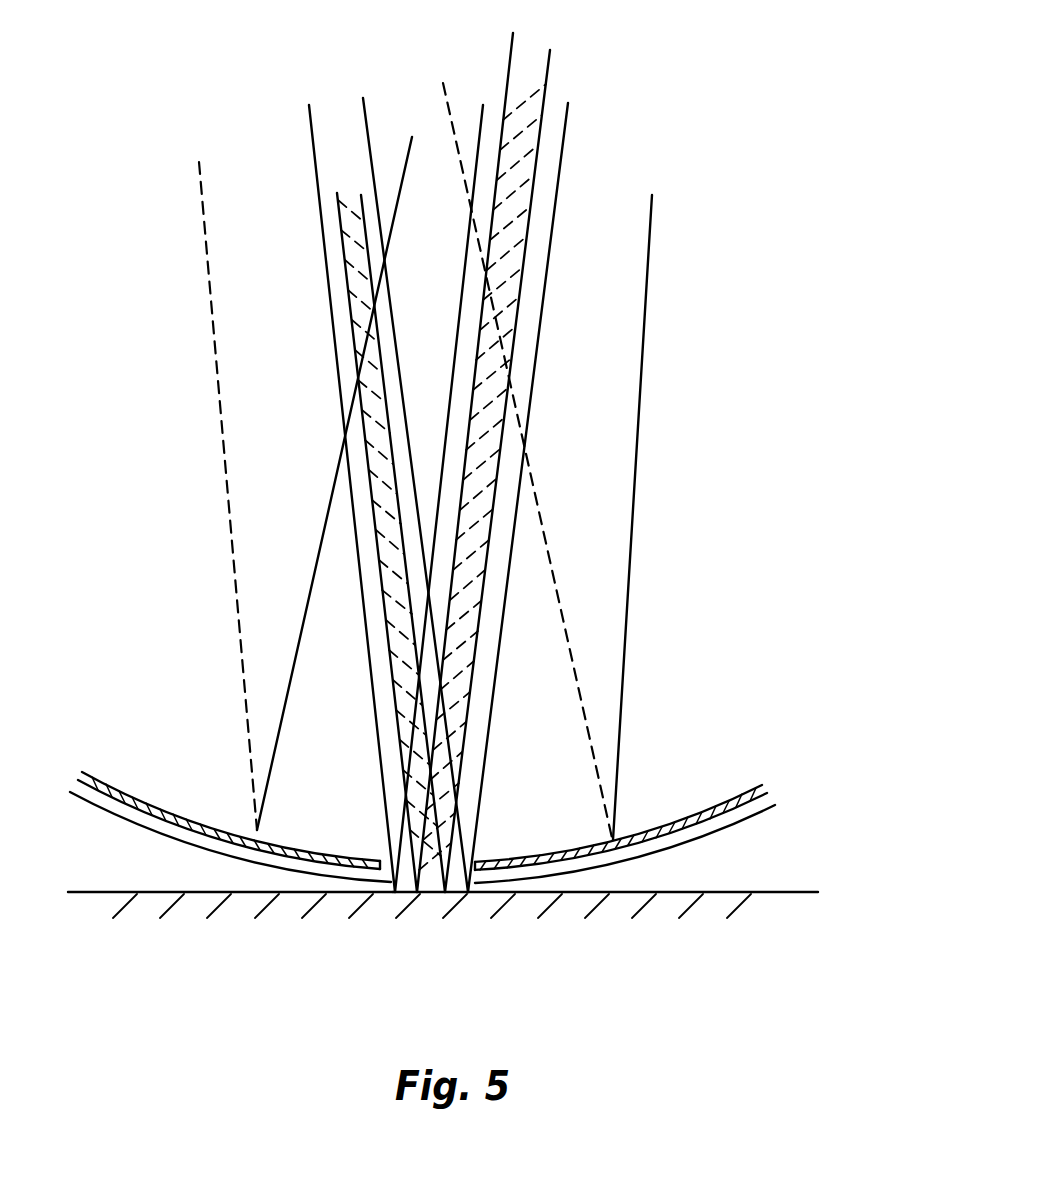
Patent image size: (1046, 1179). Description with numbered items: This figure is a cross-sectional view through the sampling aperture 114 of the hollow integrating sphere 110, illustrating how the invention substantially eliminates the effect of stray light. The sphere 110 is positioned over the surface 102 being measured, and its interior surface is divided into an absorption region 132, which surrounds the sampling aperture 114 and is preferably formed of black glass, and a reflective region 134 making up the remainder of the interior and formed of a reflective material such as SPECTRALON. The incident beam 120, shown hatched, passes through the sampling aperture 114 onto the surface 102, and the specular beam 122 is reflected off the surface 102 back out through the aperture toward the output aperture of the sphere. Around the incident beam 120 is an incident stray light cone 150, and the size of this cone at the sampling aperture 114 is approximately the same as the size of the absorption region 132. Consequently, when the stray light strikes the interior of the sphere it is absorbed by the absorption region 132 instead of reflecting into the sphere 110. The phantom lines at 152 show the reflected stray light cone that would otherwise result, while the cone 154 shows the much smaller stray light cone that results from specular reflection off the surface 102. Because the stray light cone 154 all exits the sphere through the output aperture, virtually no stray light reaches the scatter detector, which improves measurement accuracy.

The surface 102 is at (715, 894).
The hollow sphere 110 is at (722, 822).
The sampling aperture 114 is at (392, 876).
The incident beam 120 is at (530, 92).
The specular beam 122 is at (402, 663).
The absorption region 132 is at (530, 852).
The reflective region 134 is at (679, 813).
The incident stray light cone 150 is at (639, 433).
The reflected stray light cone (phantom) 152 is at (205, 257).
The stray light cone 154 is at (314, 185).